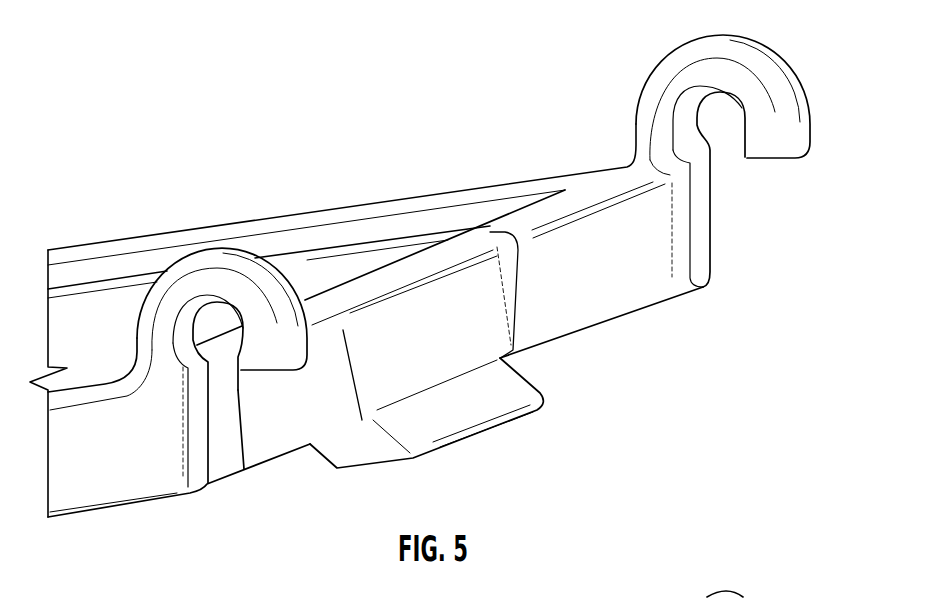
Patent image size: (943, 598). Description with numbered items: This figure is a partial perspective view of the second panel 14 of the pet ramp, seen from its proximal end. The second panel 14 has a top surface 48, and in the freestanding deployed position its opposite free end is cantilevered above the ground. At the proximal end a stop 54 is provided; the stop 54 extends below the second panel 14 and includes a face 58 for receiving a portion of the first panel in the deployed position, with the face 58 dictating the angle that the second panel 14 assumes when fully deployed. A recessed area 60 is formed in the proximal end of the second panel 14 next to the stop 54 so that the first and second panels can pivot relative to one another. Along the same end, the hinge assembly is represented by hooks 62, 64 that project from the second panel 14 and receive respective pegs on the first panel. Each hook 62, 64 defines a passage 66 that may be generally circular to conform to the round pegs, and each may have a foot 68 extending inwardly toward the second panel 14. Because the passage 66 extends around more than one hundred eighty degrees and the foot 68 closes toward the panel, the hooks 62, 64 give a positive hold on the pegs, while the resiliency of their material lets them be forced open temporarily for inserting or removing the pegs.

The second panel 14 is at (87, 515).
The top surface 48 is at (112, 338).
The stop 54 is at (347, 471).
The face 58 is at (488, 408).
The recessed area 60 is at (492, 323).
The hook 62 is at (215, 258).
The hook 64 is at (665, 65).
The passage 66 is at (733, 100).
The foot 68 is at (244, 469).